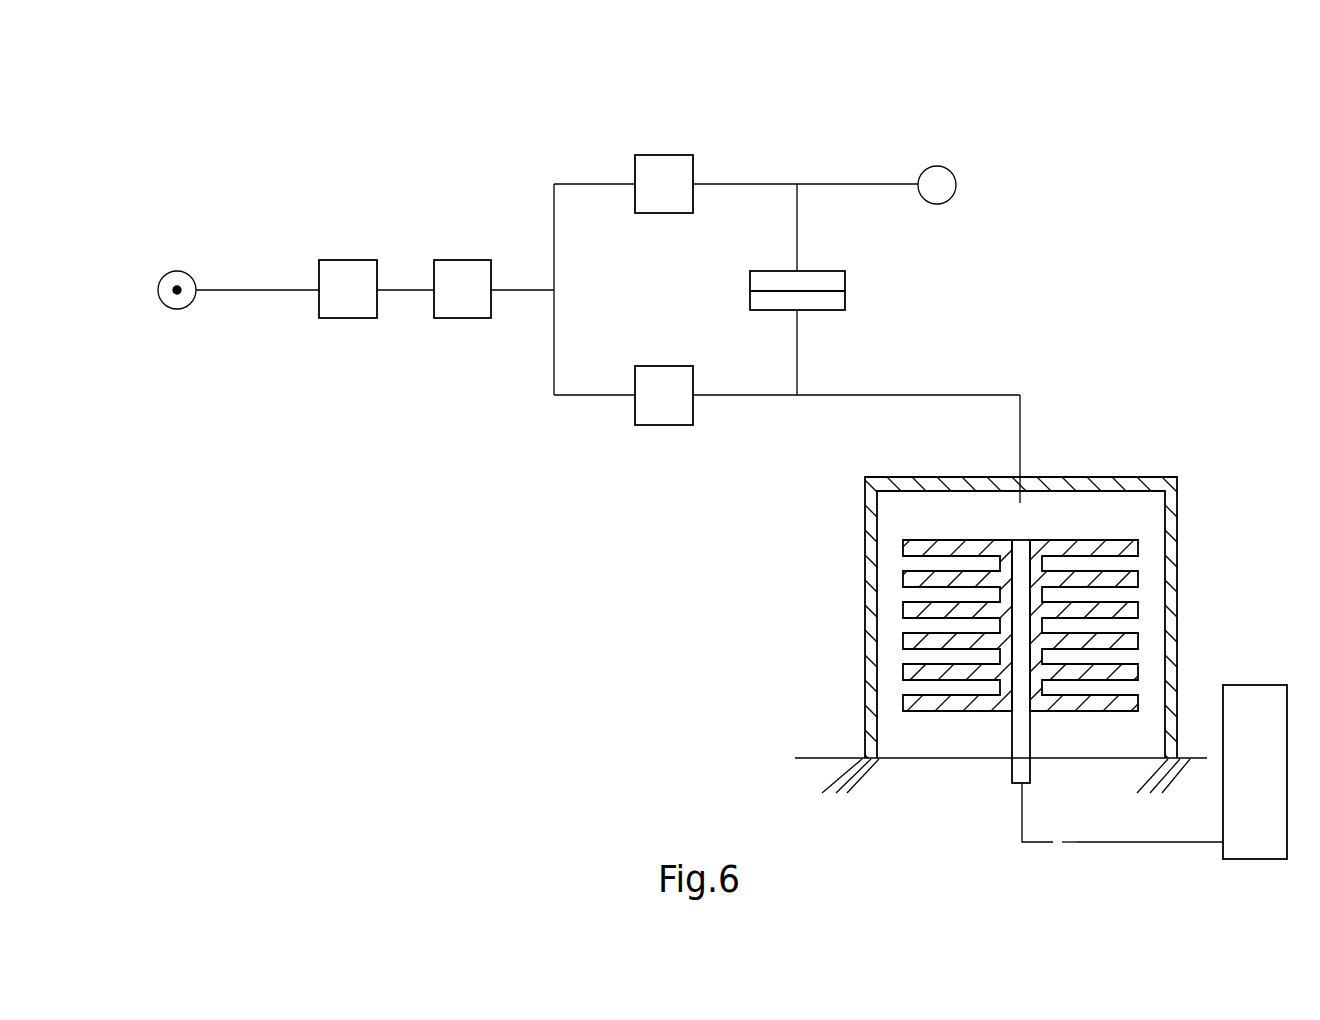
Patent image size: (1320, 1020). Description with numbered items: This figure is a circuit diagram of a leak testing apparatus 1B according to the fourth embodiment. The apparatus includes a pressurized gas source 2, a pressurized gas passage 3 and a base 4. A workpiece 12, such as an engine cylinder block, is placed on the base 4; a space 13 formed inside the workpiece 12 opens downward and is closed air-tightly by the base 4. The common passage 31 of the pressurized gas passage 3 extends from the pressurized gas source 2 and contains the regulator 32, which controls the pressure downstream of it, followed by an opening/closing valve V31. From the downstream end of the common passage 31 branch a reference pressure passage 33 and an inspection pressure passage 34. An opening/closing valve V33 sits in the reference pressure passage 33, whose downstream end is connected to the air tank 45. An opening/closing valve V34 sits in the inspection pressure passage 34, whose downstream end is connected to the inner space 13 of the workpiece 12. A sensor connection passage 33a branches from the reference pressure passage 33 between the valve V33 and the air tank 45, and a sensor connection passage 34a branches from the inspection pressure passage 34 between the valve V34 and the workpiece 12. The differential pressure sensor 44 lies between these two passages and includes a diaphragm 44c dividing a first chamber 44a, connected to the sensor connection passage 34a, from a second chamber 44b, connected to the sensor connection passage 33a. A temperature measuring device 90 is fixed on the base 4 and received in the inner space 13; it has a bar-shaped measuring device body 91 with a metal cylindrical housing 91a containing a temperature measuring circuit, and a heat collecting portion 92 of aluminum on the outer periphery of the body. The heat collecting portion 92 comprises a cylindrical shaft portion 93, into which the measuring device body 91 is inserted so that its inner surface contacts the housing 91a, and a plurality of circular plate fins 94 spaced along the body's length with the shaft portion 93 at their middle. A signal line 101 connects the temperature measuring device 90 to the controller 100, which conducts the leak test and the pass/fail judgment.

The leak testing apparatus 1B is at (175, 205).
The pressurized gas source 2 is at (162, 273).
The pressurized gas passage 3 is at (347, 422).
The common passage 31 is at (258, 288).
The regulator 32 is at (350, 260).
The opening/closing valve V31 is at (464, 260).
The opening/closing valve V33 is at (645, 155).
The opening/closing valve V34 is at (640, 366).
The reference pressure passage 33 is at (752, 184).
The sensor connection passage 33a is at (797, 232).
The inspection pressure passage 34 is at (750, 396).
The sensor connection passage 34a is at (797, 370).
The differential pressure sensor 44 is at (840, 270).
The first chamber 44a is at (845, 300).
The second chamber 44b is at (845, 280).
The diaphragm 44c is at (766, 290).
The air tank 45 is at (951, 171).
The workpiece 12 is at (1140, 477).
The inner space 13 is at (1092, 510).
The temperature measuring device 90 is at (1142, 533).
The measuring device body 91 is at (1028, 540).
The cylindrical housing 91a is at (1000, 567).
The heat collecting portion 92 is at (925, 535).
The shaft portion 93 is at (1000, 687).
The fins 94 is at (903, 548).
The base 4 is at (820, 758).
The controller 100 is at (1248, 685).
The signal line 101 is at (1130, 842).